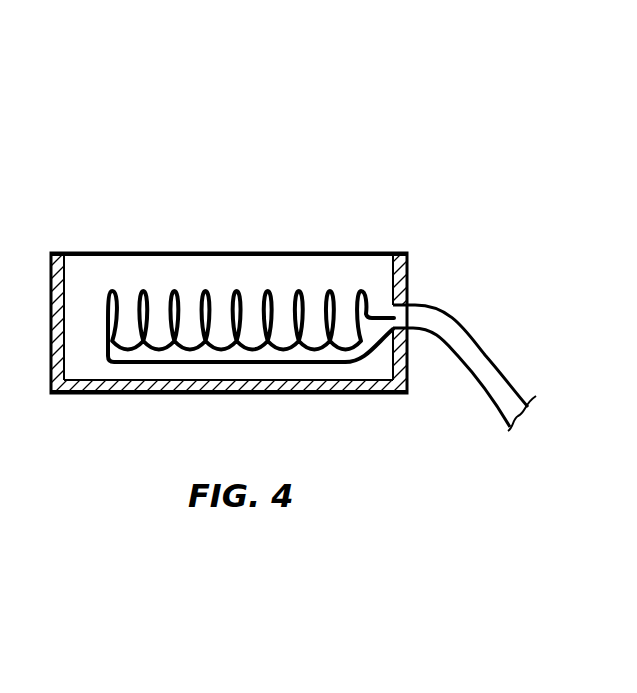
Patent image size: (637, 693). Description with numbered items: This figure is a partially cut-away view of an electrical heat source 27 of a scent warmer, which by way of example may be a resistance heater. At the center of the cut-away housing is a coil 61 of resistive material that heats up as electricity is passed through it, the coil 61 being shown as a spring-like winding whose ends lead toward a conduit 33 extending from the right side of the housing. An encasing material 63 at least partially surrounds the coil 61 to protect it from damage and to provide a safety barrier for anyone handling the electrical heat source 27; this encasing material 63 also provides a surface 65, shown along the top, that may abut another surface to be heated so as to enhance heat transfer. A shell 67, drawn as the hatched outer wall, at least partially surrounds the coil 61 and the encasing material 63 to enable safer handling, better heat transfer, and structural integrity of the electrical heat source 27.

The electrical heat source 27 is at (268, 170).
The tube 33 is at (478, 342).
The coil 61 is at (276, 300).
The encasing material 63 is at (117, 268).
The surface 65 is at (202, 253).
The shell 67 is at (125, 393).